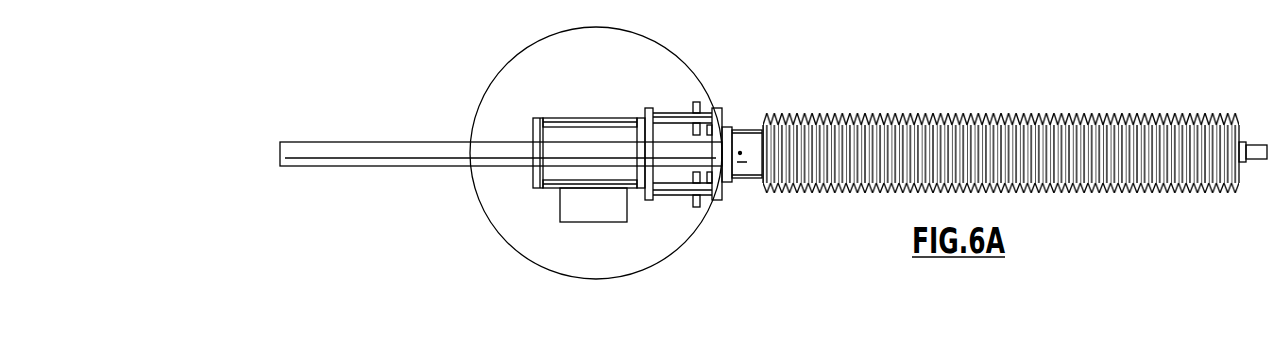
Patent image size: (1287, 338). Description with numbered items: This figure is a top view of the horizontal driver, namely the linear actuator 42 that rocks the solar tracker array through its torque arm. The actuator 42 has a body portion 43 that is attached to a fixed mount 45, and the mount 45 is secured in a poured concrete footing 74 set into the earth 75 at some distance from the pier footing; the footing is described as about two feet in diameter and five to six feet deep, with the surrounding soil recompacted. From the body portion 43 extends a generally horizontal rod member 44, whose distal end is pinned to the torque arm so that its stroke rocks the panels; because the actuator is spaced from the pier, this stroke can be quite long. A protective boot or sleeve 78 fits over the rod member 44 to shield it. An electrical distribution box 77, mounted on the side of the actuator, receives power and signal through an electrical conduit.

The linear actuator 42 is at (760, 102).
The body portion 43 is at (663, 107).
The rod member 44 is at (1015, 131).
The fixed mount 45 is at (545, 188).
The poured concrete footing 74 is at (593, 280).
The earth 75 is at (435, 250).
The electrical distribution box 77 is at (590, 222).
The protective boot or sleeve 78 is at (880, 115).